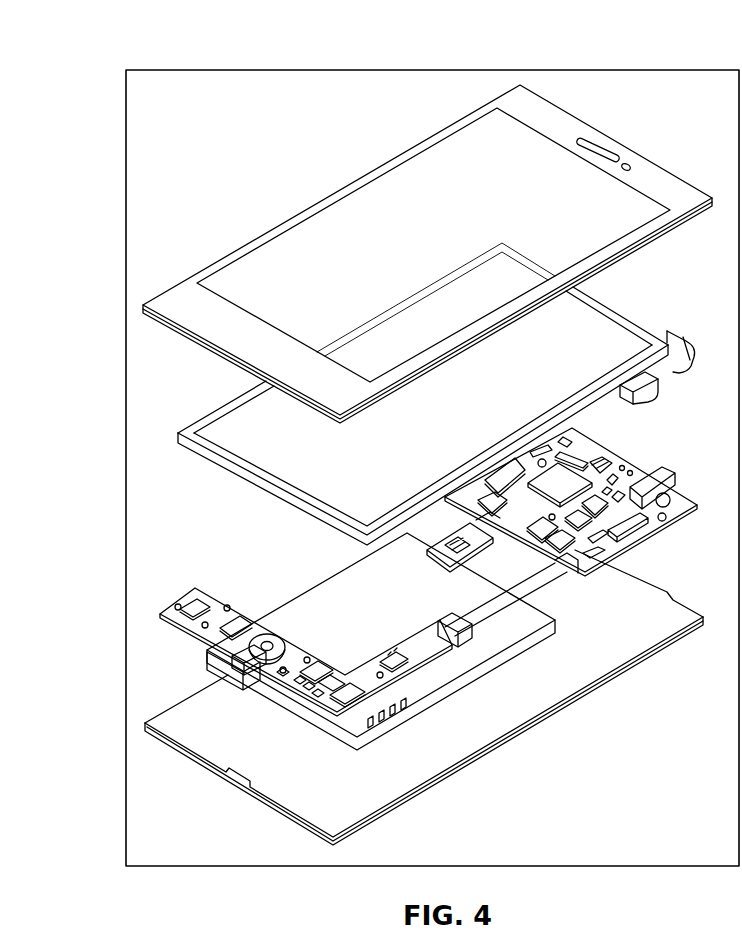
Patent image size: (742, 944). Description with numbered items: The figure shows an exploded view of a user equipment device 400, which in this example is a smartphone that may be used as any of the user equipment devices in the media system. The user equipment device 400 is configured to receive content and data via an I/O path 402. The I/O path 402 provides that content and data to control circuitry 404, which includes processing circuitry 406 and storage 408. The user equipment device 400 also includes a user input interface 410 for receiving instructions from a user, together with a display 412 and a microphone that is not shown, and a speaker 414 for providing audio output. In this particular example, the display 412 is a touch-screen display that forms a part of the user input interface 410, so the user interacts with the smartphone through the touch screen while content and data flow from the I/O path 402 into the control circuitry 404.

The user equipment device 400 is at (259, 46).
The I/O path 402 is at (245, 658).
The control circuitry 404 is at (642, 553).
The processing circuitry 406 is at (640, 512).
The storage 408 is at (589, 511).
The user input interface 410 is at (572, 321).
The display 412 is at (640, 357).
The speaker 414 is at (592, 143).